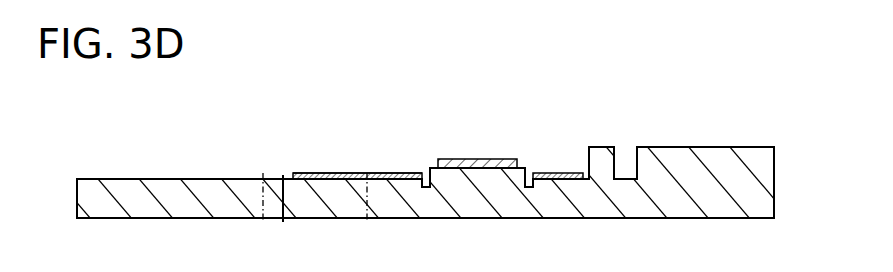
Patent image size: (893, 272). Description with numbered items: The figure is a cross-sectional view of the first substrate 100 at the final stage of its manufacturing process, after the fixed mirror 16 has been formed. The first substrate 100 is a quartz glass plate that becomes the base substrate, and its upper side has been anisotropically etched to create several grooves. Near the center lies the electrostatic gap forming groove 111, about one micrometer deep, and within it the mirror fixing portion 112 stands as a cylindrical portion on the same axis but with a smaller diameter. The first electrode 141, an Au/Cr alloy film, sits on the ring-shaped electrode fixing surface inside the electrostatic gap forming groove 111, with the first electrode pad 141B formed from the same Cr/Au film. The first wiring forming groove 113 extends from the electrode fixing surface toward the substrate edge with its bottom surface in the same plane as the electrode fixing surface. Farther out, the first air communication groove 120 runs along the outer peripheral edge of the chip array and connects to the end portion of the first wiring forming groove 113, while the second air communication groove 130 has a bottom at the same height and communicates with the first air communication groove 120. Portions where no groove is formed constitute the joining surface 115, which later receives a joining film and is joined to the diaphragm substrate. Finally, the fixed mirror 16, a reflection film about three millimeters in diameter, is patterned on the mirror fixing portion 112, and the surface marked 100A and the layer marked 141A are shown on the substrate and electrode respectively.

The first substrate 100 is at (702, 70).
The upper surface of substrate 100A is at (738, 147).
The second air communication groove 130 is at (116, 179).
The first air communication groove 120 is at (650, 120).
The first electrode 141 is at (397, 172).
The upper surface of thin film layer 141A is at (362, 172).
The first electrode pad 141B is at (308, 172).
The first wiring forming groove 113 is at (305, 172).
The electrostatic gap forming groove 111 is at (412, 172).
The fixed mirror 16 is at (502, 159).
The mirror fixing portion 112 is at (450, 159).
The joining surface 115 is at (600, 147).